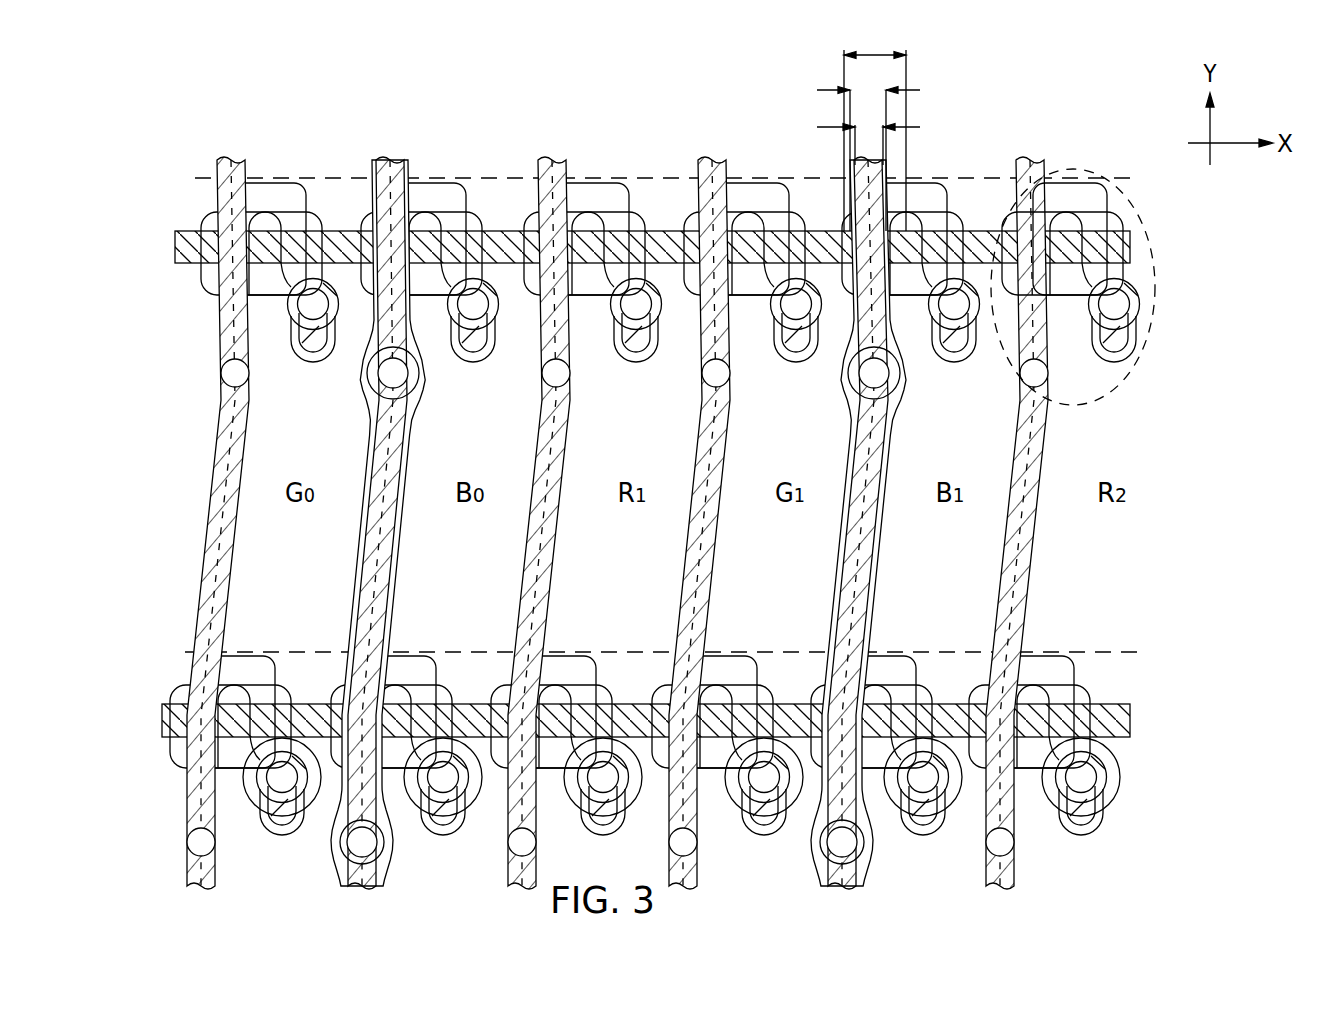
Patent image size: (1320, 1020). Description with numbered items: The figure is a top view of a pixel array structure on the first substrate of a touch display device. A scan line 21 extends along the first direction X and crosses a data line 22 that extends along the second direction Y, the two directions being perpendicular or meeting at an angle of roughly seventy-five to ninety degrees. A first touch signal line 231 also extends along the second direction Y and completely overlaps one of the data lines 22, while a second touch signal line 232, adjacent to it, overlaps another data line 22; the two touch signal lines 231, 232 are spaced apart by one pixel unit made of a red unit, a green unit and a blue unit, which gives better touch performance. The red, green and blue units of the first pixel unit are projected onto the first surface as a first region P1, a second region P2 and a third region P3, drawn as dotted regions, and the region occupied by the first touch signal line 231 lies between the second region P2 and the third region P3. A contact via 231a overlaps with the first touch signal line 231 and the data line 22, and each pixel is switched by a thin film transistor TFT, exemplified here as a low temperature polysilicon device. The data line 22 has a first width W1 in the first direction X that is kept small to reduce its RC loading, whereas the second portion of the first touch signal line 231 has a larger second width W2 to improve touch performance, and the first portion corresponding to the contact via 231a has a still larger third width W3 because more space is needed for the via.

The scan line 21 is at (175, 247).
The data line 22 is at (232, 160).
The first touch signal line 231 is at (866, 857).
The contact via 231a is at (826, 855).
The second touch signal line 232 is at (341, 862).
The thin film transistor TFT is at (1156, 296).
The first region P1 is at (642, 178).
The second region P2 is at (802, 178).
The third region P3 is at (982, 178).
The first width W1 is at (868, 131).
The second width W2 is at (868, 146).
The third width W3 is at (875, 128).